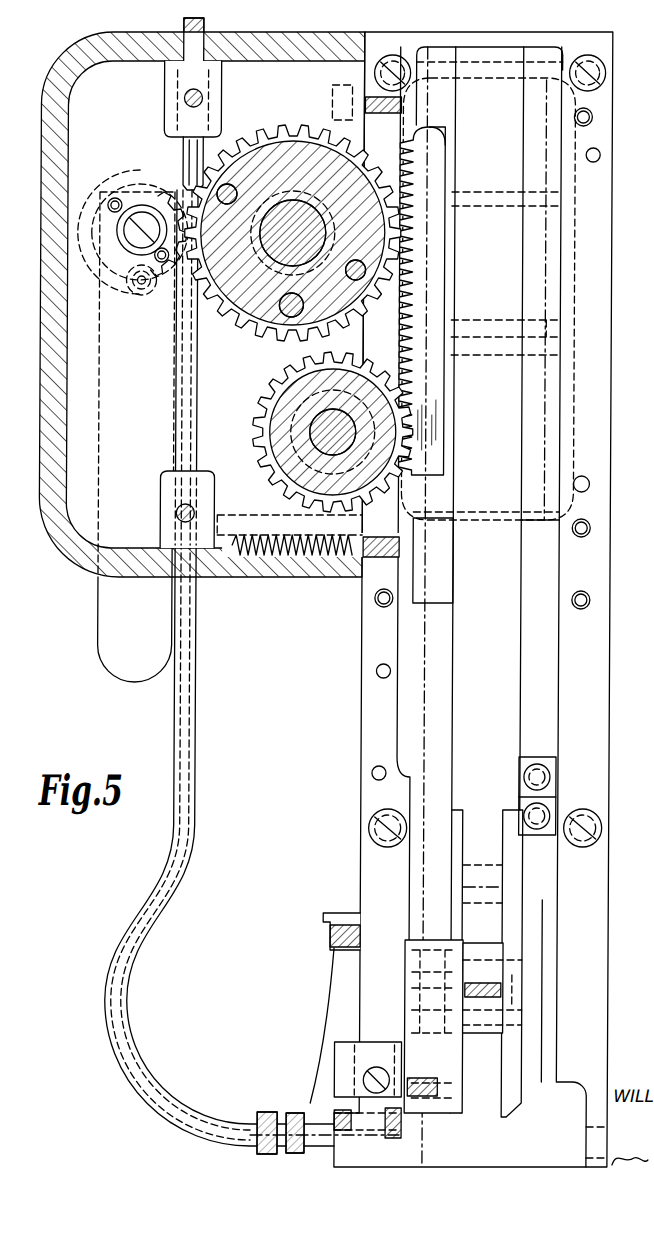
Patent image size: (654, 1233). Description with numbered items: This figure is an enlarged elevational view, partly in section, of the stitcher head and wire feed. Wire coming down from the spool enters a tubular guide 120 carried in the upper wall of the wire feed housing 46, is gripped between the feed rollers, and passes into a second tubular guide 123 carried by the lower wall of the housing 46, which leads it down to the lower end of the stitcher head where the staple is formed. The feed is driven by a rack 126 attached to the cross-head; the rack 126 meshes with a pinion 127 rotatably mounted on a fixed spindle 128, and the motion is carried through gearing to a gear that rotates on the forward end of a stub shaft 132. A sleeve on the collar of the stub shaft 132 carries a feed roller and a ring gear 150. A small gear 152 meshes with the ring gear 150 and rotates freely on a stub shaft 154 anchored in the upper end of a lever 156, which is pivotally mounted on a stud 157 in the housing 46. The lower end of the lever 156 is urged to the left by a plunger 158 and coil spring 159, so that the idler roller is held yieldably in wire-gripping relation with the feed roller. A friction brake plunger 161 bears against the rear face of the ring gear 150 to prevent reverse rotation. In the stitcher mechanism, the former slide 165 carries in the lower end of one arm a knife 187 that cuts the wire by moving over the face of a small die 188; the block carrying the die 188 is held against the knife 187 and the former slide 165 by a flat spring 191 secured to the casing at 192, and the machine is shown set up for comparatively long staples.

The wire feed housing 46 is at (52, 530).
The tubular guide 120 is at (186, 155).
The tubular guide 123 is at (193, 730).
The rack 126 is at (434, 418).
The pinion 127 is at (313, 432).
The fixed spindle or shaft 128 is at (300, 450).
The stub shaft 132 is at (262, 318).
The ring gear 150 is at (292, 236).
The small gear 152 is at (120, 182).
The stub shaft 154 is at (127, 245).
The lever 156 is at (102, 660).
The stud 157 is at (145, 297).
The plunger 158 is at (213, 553).
The coil spring 159 is at (292, 560).
The plunger 161 is at (292, 290).
The former slide 165 is at (517, 1053).
The knife 187 is at (417, 1112).
The die 188 is at (413, 1150).
The flat spring 191 is at (335, 1020).
The securing point on casing 192 is at (337, 950).